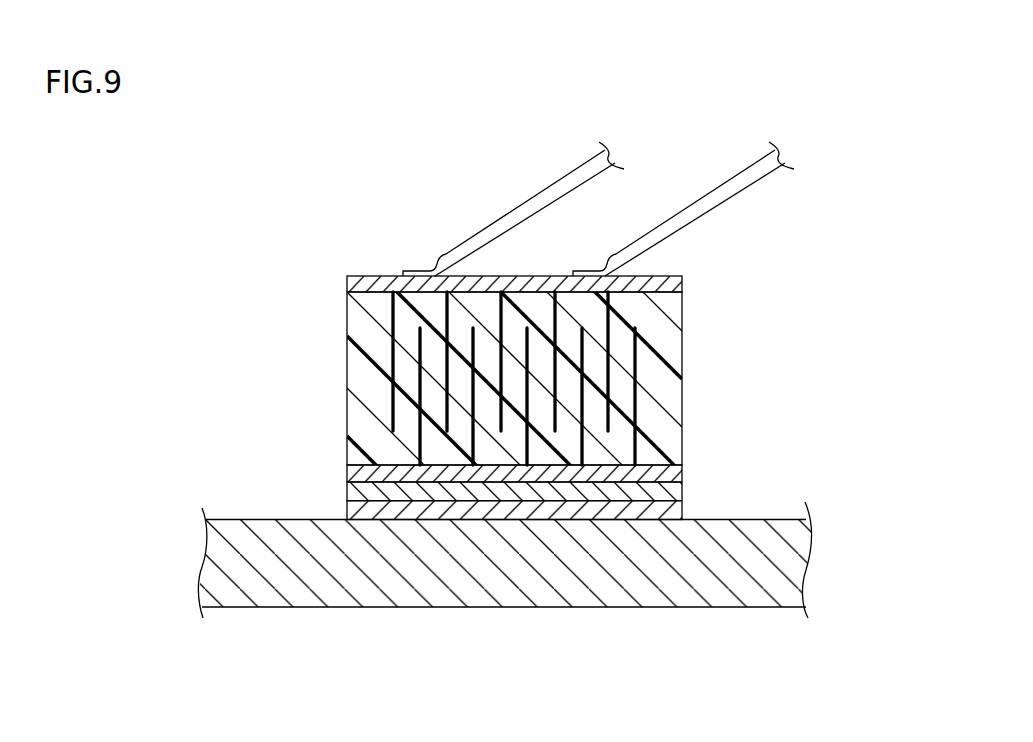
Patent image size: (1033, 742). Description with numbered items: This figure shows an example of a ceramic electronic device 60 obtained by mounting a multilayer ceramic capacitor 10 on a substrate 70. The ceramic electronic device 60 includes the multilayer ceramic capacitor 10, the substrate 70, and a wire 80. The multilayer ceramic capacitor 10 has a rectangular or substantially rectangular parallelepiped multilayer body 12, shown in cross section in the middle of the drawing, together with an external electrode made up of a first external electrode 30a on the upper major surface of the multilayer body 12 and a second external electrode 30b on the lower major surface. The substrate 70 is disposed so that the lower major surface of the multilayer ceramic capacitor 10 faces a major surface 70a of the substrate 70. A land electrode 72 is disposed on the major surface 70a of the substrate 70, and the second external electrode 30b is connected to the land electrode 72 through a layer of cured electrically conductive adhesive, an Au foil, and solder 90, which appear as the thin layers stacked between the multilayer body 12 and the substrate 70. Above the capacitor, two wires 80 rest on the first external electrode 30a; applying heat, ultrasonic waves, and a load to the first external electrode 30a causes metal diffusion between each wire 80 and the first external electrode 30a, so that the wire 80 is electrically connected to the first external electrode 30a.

The multilayer ceramic capacitor 10 is at (357, 263).
The multilayer body 12 is at (683, 353).
The first external electrode 30a is at (354, 288).
The second external electrode 30b is at (348, 472).
The ceramic electronic device 60 is at (285, 248).
The substrate 70 is at (771, 519).
The major surface 70a is at (247, 518).
The land electrode 72 is at (670, 512).
The wire 80 is at (504, 228).
The solder 90 is at (672, 494).